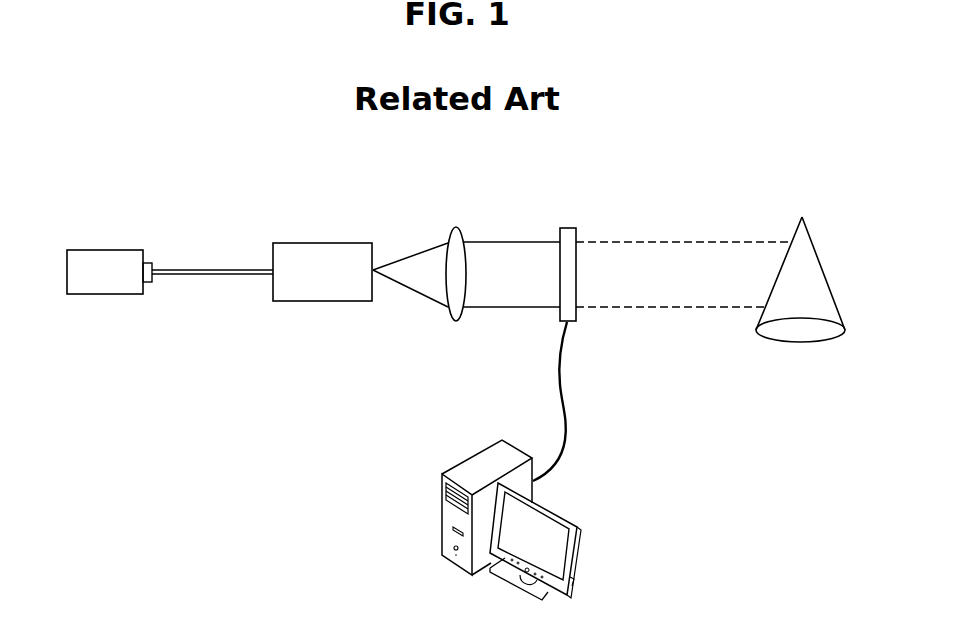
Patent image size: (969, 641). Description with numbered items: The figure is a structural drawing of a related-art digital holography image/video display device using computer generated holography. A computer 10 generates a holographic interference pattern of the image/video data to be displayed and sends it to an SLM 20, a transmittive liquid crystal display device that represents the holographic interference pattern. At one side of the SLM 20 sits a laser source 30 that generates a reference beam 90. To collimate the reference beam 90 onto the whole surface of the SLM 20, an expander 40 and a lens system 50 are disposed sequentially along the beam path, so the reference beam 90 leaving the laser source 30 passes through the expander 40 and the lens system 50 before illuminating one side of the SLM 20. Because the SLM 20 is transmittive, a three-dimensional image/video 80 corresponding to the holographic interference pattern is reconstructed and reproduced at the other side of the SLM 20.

The computer 10 is at (441, 514).
The SLM (Spatial Light Modulator) 20 is at (568, 228).
The laser source 30 is at (103, 295).
The expander 40 is at (322, 302).
The lens system 50 is at (455, 323).
The 3D image/video 80 is at (800, 342).
The reference beam 90 is at (185, 268).